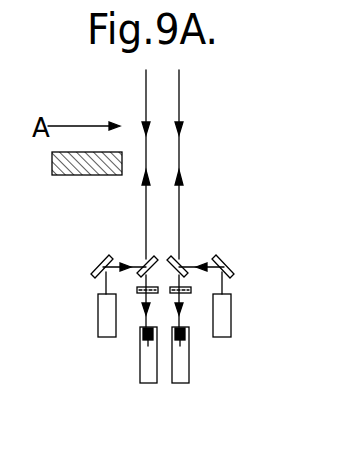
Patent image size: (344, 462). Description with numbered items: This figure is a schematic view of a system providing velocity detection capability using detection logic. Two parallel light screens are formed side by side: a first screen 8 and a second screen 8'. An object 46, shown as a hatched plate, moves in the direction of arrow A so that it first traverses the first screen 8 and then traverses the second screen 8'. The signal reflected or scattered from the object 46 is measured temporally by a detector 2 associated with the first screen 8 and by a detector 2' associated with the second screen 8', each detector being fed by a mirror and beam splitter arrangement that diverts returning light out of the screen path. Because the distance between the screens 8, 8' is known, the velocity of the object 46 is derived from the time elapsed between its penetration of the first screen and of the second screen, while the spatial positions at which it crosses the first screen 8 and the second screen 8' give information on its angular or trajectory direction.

The first screen 8 is at (119, 164).
The second screen 8' is at (208, 164).
The object 46 is at (62, 176).
The detector 2 is at (90, 326).
The detector 2' is at (241, 326).